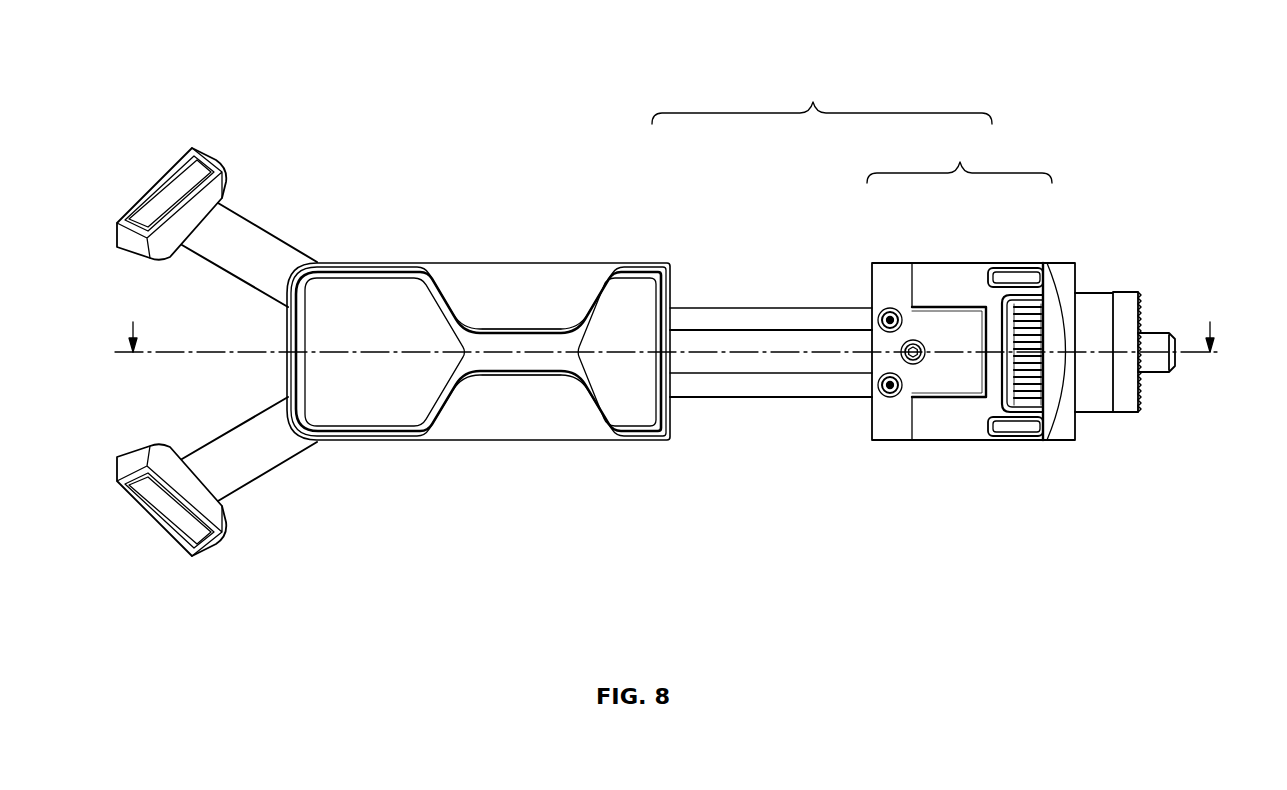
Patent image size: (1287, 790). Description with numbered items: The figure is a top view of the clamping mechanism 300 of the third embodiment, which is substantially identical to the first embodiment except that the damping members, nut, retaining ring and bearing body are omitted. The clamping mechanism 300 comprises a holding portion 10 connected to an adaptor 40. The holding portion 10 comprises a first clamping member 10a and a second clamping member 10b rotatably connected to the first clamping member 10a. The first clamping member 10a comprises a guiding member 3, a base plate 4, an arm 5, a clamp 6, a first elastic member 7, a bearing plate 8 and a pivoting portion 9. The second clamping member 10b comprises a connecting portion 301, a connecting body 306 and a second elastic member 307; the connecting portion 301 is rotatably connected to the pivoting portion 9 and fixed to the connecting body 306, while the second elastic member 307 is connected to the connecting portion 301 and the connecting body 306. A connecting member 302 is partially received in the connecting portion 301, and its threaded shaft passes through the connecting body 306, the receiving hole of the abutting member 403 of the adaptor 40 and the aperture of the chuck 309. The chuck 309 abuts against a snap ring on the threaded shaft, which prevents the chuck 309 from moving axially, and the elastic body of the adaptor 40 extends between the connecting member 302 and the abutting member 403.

The clamping mechanism 300 is at (548, 60).
The guiding member 3 is at (792, 320).
The base plate 4 is at (518, 288).
The arm 5 is at (257, 245).
The clamp 6 is at (208, 157).
The first elastic member 7 is at (639, 405).
The bearing plate 8 is at (533, 355).
The pivoting portion 9 is at (890, 263).
The holding portion 10 is at (466, 238).
The first clamping member 10a is at (648, 262).
The second clamping member 10b is at (957, 281).
The connecting portion 301 is at (945, 263).
The connecting member 302 is at (1157, 338).
The connecting body 306 is at (1057, 263).
The second elastic member 307 is at (1000, 263).
The chuck 309 is at (1122, 302).
The adaptor 40 is at (1140, 398).
The abutting member 403 is at (1087, 400).